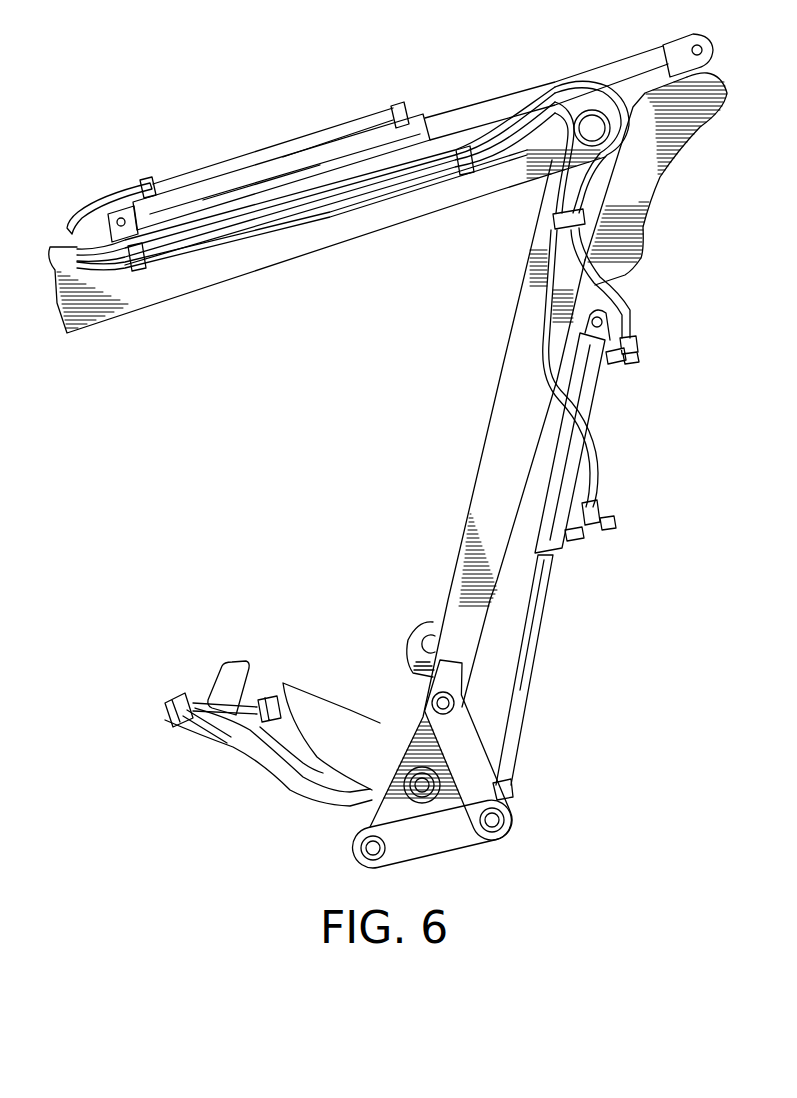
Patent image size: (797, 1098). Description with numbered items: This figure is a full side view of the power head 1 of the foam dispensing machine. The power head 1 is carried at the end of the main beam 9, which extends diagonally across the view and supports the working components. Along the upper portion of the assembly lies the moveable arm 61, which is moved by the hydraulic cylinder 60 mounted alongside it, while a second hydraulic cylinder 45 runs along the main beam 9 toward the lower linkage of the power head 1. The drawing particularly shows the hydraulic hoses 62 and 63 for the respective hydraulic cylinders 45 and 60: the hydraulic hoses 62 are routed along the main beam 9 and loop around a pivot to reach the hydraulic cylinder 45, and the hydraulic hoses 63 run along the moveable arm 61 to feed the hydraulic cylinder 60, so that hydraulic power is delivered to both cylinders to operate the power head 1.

The power head 1 is at (565, 757).
The main beam 9 is at (507, 420).
The hydraulic cylinder 45 is at (560, 551).
The hydraulic cylinder 60 is at (240, 177).
The moveable arm 61 is at (117, 307).
The hydraulic hoses 62 is at (640, 305).
The hydraulic hoses 63 is at (83, 217).